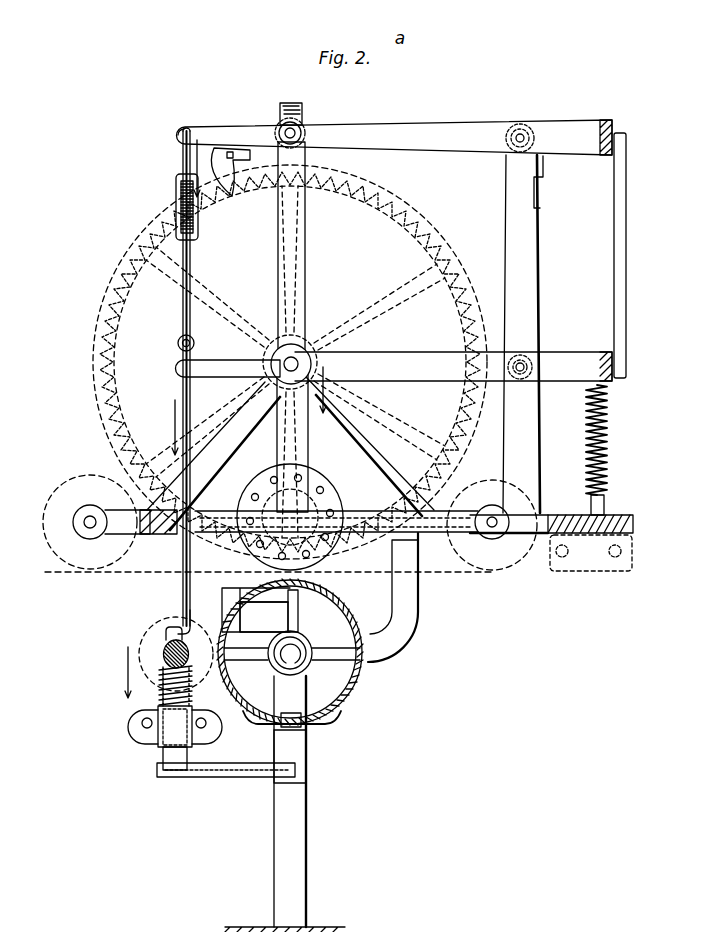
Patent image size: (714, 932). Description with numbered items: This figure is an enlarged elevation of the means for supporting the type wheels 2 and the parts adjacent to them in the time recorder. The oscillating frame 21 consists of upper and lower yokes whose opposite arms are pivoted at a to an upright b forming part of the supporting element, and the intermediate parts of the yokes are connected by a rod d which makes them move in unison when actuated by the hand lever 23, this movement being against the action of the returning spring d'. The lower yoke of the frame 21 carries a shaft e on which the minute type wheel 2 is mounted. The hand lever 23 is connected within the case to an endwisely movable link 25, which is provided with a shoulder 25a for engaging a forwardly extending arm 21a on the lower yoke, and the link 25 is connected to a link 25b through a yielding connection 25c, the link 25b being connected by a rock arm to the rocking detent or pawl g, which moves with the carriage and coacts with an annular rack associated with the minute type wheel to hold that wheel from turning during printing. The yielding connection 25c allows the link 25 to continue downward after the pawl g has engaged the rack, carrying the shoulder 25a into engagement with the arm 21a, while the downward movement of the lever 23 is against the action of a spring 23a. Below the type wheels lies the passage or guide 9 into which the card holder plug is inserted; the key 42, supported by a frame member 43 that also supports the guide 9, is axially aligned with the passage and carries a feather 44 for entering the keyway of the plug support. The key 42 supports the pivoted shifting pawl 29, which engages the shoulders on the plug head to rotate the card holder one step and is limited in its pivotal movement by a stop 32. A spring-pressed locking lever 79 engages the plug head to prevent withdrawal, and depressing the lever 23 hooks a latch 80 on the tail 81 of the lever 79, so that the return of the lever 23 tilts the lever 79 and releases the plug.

The type wheels 2 is at (452, 258).
The shaft e is at (298, 354).
The upright b is at (297, 130).
The pivot a is at (520, 136).
The oscillating frame 21 is at (548, 115).
The rod d is at (630, 255).
The returning spring d' is at (613, 450).
The link 25 is at (191, 290).
The link 25b is at (185, 162).
The yielding connection 25c is at (180, 214).
The shoulder 25a is at (178, 343).
The forwardly extending arm 21a is at (196, 372).
The rocking detent or pawl g is at (240, 158).
The passage or guide 9 is at (356, 676).
The key 42 is at (304, 662).
The feather 44 is at (283, 674).
The shifting pawl 29 is at (298, 598).
The stop 32 is at (298, 618).
The locking lever 79 is at (312, 727).
The frame member 43 is at (304, 804).
The hand lever 23 is at (152, 638).
The spring 23a is at (160, 702).
The latch 80 is at (162, 760).
The tail 81 is at (220, 777).